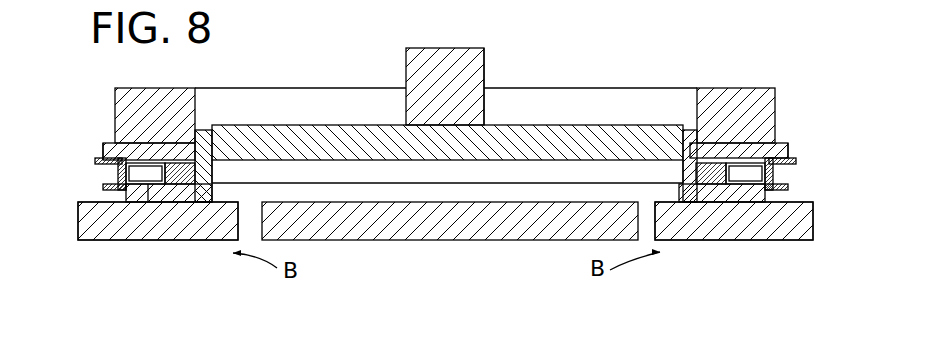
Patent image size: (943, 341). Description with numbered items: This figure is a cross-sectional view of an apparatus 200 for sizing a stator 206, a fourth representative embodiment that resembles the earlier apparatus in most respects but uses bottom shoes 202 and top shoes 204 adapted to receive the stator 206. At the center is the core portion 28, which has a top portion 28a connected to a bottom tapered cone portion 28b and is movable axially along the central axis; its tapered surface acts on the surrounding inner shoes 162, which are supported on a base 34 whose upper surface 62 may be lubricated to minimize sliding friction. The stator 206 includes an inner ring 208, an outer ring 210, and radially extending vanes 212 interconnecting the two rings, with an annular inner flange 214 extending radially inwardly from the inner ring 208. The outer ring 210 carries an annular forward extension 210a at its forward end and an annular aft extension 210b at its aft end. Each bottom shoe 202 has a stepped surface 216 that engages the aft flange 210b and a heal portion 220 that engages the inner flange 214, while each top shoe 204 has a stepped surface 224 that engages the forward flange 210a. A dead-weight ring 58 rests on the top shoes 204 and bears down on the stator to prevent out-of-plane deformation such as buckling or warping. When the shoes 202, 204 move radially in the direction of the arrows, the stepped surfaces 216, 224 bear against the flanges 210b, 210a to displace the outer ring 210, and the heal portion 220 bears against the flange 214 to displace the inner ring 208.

The apparatus 200 is at (697, 62).
The core portion 28 is at (488, 78).
The top portion 28a is at (485, 98).
The bottom tapered cone portion 28b is at (370, 125).
The dead-weight ring 58 is at (152, 88).
The top shoes 204 is at (152, 152).
The heal portion 220 is at (205, 178).
The inner flange 214 is at (178, 165).
The forward extension 210a is at (117, 157).
The outer ring 210 is at (120, 175).
The aft extension 210b is at (118, 191).
The stepped surface 224 is at (118, 160).
The vanes 212 is at (138, 177).
The bottom shoes 202 is at (155, 200).
The stator 206 is at (150, 184).
The upper surface 62 is at (400, 202).
The inner ring 208 is at (200, 170).
The inner shoes 162 is at (200, 195).
The base 34 is at (678, 242).
The stepped surface 216 is at (103, 208).